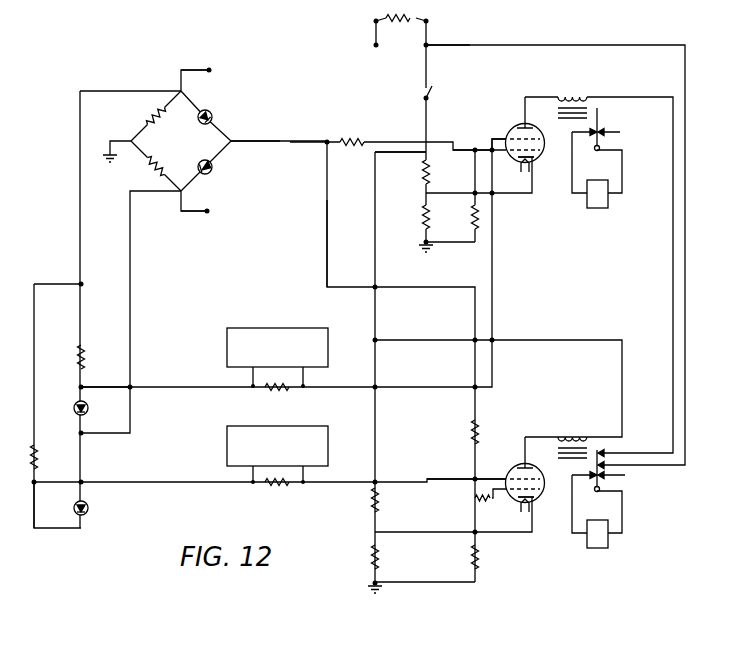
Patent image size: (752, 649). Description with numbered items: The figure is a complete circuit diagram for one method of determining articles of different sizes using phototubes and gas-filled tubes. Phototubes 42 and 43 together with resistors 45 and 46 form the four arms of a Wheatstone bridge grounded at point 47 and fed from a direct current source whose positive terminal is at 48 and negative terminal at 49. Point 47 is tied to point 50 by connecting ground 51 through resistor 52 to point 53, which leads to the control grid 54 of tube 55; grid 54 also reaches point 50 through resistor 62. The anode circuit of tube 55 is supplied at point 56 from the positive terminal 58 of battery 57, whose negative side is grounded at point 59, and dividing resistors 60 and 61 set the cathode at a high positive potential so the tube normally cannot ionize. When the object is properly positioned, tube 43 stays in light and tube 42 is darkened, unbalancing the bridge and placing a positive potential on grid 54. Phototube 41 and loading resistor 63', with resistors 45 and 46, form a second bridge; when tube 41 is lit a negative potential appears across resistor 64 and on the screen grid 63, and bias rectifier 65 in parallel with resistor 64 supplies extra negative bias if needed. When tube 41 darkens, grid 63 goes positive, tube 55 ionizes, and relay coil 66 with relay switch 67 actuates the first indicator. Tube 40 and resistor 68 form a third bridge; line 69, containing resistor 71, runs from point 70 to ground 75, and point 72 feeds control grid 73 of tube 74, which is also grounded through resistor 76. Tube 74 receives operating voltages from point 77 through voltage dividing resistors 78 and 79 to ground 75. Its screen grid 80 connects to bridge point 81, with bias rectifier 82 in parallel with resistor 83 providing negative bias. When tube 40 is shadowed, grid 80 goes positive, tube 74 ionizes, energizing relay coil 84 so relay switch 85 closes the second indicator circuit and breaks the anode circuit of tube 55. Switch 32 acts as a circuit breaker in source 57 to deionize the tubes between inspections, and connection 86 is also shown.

The switch 32 is at (430, 92).
The phototube 40 is at (88, 508).
The phototube 41 is at (88, 407).
The phototube 42 is at (211, 170).
The phototube 43 is at (210, 114).
The resistor 45 is at (149, 113).
The resistor 46 is at (148, 168).
The ground point 47 is at (118, 141).
The positive terminal 48 is at (209, 69).
The negative terminal 49 is at (207, 212).
The point 50 is at (232, 140).
The ground 51 is at (418, 241).
The resistor 52 is at (474, 226).
The point 53 is at (480, 146).
The control grid 54 is at (536, 155).
The tube 55 is at (541, 139).
The point 56 is at (429, 49).
The battery 57 is at (404, 13).
The positive terminal 58 is at (428, 23).
The ground point 59 is at (376, 21).
The dividing resistor 60 is at (431, 176).
The dividing resistor 61 is at (431, 216).
The resistor 62 is at (347, 138).
The screen grid 63 is at (516, 134).
The loading resistor 63' is at (95, 353).
The resistor 64 is at (287, 392).
The bias rectifier 65 is at (277, 348).
The relay coil 66 is at (581, 94).
The relay switch 67 is at (600, 127).
The resistor 68 is at (37, 452).
The line 69 is at (326, 218).
The point 70 is at (327, 140).
The resistor 71 is at (480, 428).
The point 72 is at (476, 502).
The control grid 73 is at (536, 496).
The tube 74 is at (541, 479).
The ground 75 is at (372, 583).
The resistor 76 is at (472, 555).
The point 77 is at (430, 154).
The voltage dividing resistor 78 is at (381, 500).
The voltage dividing resistor 79 is at (381, 554).
The screen grid 80 is at (508, 474).
The point 81 is at (38, 484).
The bias rectifier 82 is at (277, 445).
The resistor 83 is at (287, 488).
The relay coil 84 is at (585, 434).
The relay switch 85 is at (604, 452).
The conductor 86 is at (84, 385).